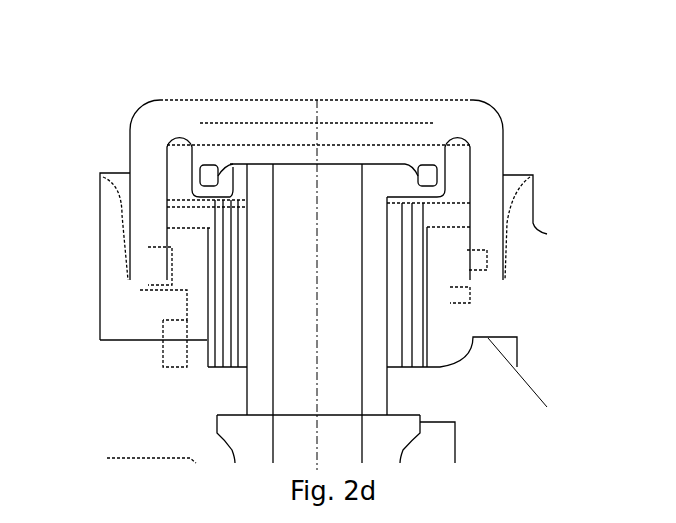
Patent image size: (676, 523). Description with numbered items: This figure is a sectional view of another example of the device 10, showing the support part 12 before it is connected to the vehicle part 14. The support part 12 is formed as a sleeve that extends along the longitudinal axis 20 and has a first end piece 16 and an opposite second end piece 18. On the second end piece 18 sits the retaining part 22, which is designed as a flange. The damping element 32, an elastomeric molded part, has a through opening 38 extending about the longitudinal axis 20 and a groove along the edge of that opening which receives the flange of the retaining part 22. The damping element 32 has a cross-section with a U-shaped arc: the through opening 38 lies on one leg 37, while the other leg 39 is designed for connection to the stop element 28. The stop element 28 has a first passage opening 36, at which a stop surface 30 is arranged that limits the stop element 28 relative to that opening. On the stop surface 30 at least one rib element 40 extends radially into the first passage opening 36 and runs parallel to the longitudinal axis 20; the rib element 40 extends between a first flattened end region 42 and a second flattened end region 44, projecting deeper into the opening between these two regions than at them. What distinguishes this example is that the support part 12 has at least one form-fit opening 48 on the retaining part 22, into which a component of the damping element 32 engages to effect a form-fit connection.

The device 10 is at (481, 60).
The support part 12 is at (445, 292).
The vehicle part 14 is at (148, 443).
The first end piece 16 is at (370, 397).
The second end piece 18 is at (257, 215).
The longitudinal axis 20 is at (319, 122).
The retaining part 22 is at (208, 163).
The stop element 28 is at (373, 297).
The stop surface 30 is at (218, 290).
The damping element 32 is at (478, 121).
The first passage opening 36 is at (217, 420).
The leg 37 is at (420, 150).
The through opening 38 is at (223, 150).
The leg 39 is at (440, 277).
The rib element 40 is at (215, 320).
The first flattened end region 42 is at (215, 263).
The second flattened end region 44 is at (212, 353).
The form-fit opening 48 is at (220, 181).